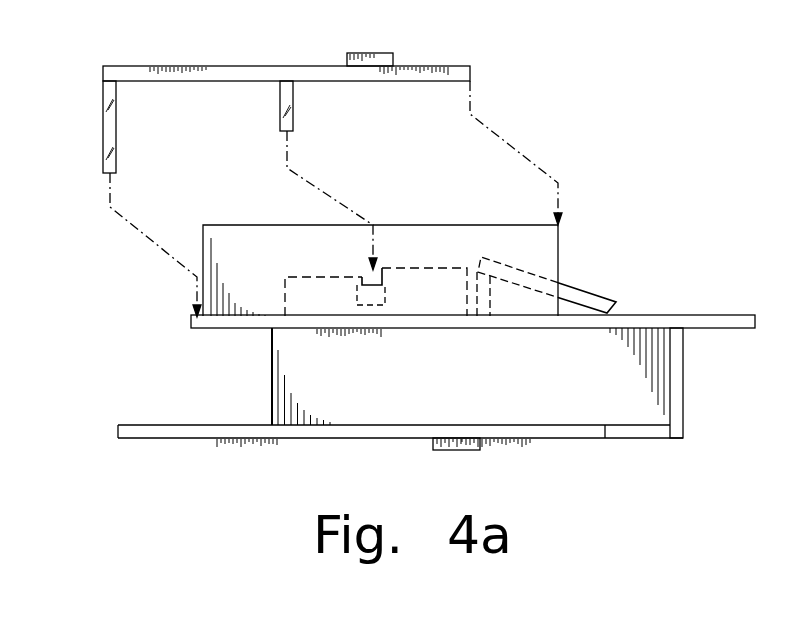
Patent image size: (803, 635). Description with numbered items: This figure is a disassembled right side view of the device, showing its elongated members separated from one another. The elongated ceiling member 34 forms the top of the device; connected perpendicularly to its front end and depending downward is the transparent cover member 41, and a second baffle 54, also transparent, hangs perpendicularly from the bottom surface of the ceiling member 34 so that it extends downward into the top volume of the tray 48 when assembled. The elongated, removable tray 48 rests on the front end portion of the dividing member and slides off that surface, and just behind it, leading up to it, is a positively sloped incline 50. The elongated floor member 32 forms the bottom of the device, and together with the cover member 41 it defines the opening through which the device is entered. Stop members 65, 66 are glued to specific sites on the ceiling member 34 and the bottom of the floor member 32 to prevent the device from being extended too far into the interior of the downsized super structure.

The elongated floor member 32 is at (190, 439).
The elongated ceiling member 34 is at (253, 65).
The transparent cover member 41 is at (103, 126).
The removable tray 48 is at (438, 268).
The positively sloped incline 50 is at (586, 291).
The second baffle 54 is at (280, 101).
The stop member 65 is at (370, 53).
The stop member 66 is at (480, 452).